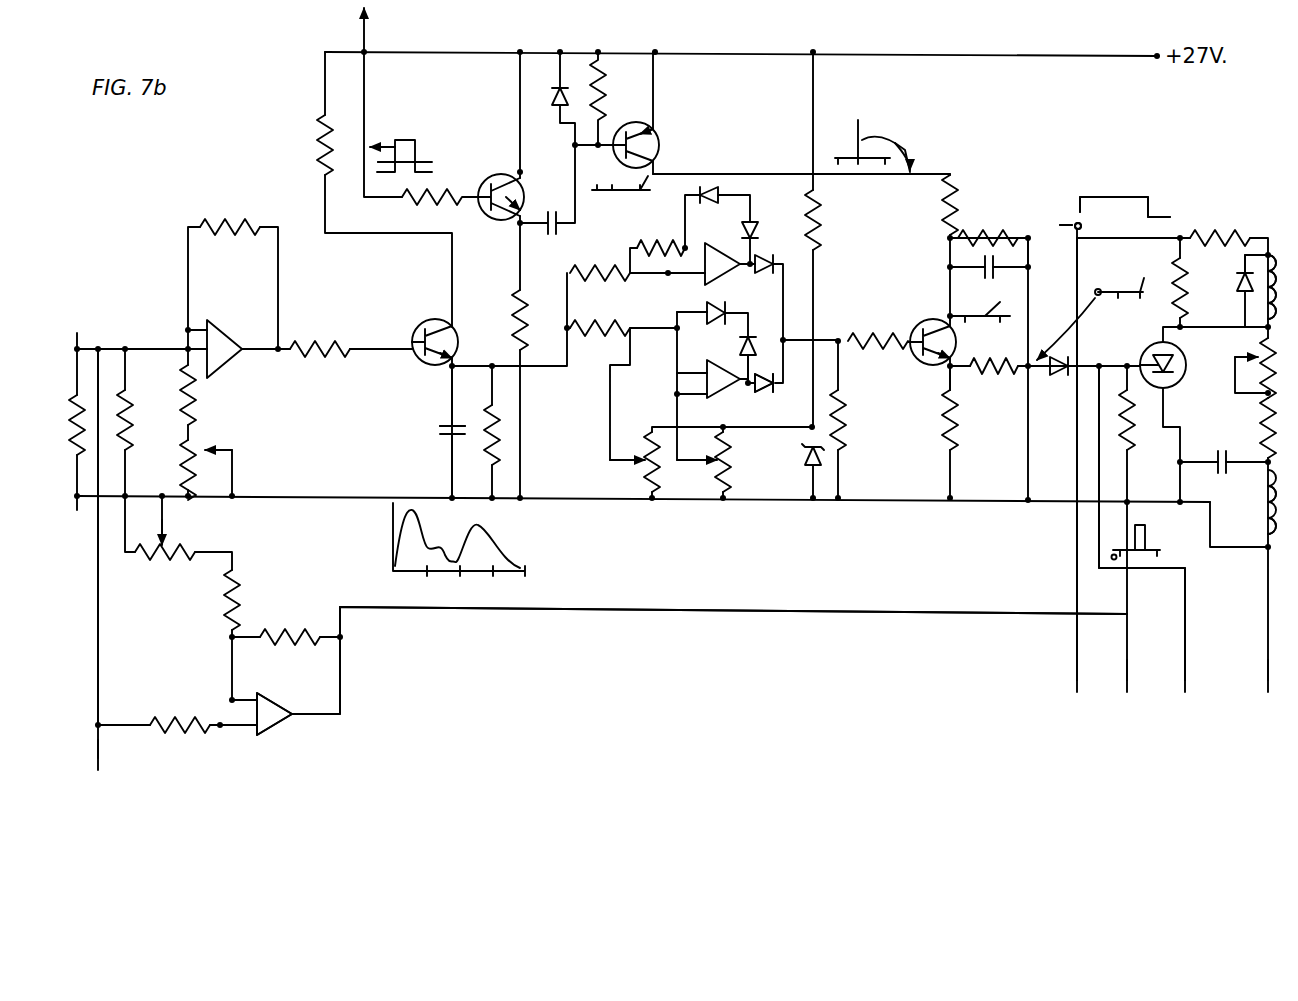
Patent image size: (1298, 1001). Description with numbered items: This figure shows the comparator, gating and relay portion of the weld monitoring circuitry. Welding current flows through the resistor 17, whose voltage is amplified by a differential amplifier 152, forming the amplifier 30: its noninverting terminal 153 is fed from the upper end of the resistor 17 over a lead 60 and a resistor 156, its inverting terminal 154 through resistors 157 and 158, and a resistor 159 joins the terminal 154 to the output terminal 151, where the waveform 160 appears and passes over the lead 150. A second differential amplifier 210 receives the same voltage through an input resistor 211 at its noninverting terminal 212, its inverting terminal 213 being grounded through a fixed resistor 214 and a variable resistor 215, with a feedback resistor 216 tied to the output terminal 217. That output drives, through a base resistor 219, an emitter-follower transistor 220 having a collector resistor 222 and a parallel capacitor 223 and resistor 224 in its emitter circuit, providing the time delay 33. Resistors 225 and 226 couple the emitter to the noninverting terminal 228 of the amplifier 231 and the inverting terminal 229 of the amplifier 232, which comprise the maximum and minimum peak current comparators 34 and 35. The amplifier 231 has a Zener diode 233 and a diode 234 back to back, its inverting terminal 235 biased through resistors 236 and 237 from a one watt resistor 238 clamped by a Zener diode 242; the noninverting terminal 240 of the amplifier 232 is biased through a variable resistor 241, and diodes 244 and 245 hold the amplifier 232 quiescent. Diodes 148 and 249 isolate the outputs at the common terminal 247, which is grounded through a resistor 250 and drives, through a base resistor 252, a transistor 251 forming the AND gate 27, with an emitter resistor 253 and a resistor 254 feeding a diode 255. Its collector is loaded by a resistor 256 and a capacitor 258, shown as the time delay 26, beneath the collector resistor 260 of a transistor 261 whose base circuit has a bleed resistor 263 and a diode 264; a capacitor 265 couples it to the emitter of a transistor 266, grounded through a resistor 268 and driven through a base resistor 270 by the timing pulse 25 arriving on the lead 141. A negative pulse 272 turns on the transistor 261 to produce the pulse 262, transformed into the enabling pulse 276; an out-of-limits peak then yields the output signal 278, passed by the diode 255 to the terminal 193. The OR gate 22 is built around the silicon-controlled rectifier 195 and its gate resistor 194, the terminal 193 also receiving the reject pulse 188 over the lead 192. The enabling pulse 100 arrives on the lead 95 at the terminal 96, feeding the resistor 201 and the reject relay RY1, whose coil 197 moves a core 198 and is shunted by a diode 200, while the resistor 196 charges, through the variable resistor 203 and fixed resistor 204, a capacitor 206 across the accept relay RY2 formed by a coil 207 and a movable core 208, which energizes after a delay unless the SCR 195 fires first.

The lead 141 is at (372, 20).
The collector resistor 222 is at (318, 148).
The timing pulse 25 is at (416, 152).
The base resistor 270 is at (450, 194).
The transistor 266 is at (525, 193).
The electrolytic capacitor 265 is at (550, 232).
The diode 264 is at (555, 108).
The bleed resistor 263 is at (606, 92).
The transistor 261 is at (660, 142).
The negative-going pulse 272 is at (580, 151).
The feedback resistor 216 is at (226, 215).
The signal noninverting terminal 212 is at (150, 338).
The voltage inverting terminal 213 is at (196, 328).
The differential amplifier 210 is at (228, 340).
The fixed resistor 214 is at (200, 386).
The output terminal 217 is at (286, 364).
The base resistor 219 is at (338, 353).
The input resistor 211 is at (130, 420).
The variable resistor 215 is at (180, 460).
The resistor 17 is at (73, 470).
The emitter-follower transistor 220 is at (458, 336).
The resistor 268 is at (512, 300).
The resistor 224 is at (500, 440).
The electrolytic capacitor 223 is at (438, 445).
The time delay circuit 33 is at (428, 433).
The resistor 225 is at (600, 266).
The resistor 226 is at (605, 325).
The voltage noninverting terminal 228 is at (668, 276).
The resistor 236 is at (648, 252).
The diode 244 is at (676, 313).
The differential amplifier 232 is at (680, 370).
The signal noninverting terminal 240 is at (675, 393).
The diode 249 is at (745, 386).
The differential amplifier 231 is at (715, 281).
The voltage inverting terminal 229 is at (681, 333).
The voltage inverting terminal 235 is at (725, 205).
The Zener diode 233 is at (725, 192).
The diode 234 is at (746, 228).
The maximum peak current comparator 34 is at (788, 217).
The diode 148 is at (762, 254).
The one watt resistor 238 is at (822, 228).
The minimum peak current comparator 35 is at (758, 302).
The diode 245 is at (760, 340).
The common output terminal 247 is at (790, 338).
The transistor 251 is at (916, 326).
The base resistor 252 is at (862, 348).
The resistor 250 is at (851, 400).
The resistor 253 is at (959, 430).
The resistor 254 is at (998, 376).
The diode 255 is at (1058, 378).
The AND gate 27 is at (925, 392).
The OR gate 22 is at (1073, 446).
The variable bias resistor 241 is at (729, 455).
The variable bias resistor 237 is at (661, 469).
The Zener diode 242 is at (805, 458).
The positive pulse 262 is at (862, 128).
The collector resistor 260 is at (960, 186).
The time delay circuit 26 is at (1018, 186).
The resistor 256 is at (1005, 228).
The electrolytic capacitor 258 is at (1030, 272).
The enabling pulse 276 is at (956, 296).
The enabling pulse 100 is at (1148, 197).
The terminal 96 is at (1180, 234).
The movable core 198 is at (1272, 245).
The resistor 201 is at (1232, 236).
The coil 197 is at (1240, 270).
The resistor 196 is at (1202, 288).
The diode 200 is at (1238, 300).
The reject relay RY1 is at (1262, 302).
The gate terminal 193 is at (1099, 362).
The positive output signal 278 is at (1143, 285).
The silicon-controlled rectifier 195 is at (1168, 390).
The variable resistor 203 is at (1265, 395).
The fixed resistor 204 is at (1258, 435).
The gate resistor 194 is at (1135, 430).
The electrolytic capacitor 206 is at (1220, 468).
The accept relay RY2 is at (1264, 484).
The coil 207 is at (1262, 508).
The movable core 208 is at (1262, 528).
The reject pulse 188 is at (1150, 541).
The lead 95 is at (1075, 584).
The lead 192 is at (1187, 602).
The lead 150 is at (760, 615).
The waveform 160 is at (488, 538).
The amplifier 30 is at (356, 689).
The lead 60 is at (100, 670).
The variable resistor 158 is at (165, 562).
The resistor 157 is at (240, 583).
The resistor 159 is at (272, 628).
The output terminal 151 is at (346, 640).
The voltage inverting terminal 154 is at (228, 700).
The differential amplifier 152 is at (275, 729).
The voltage noninverting terminal 153 is at (220, 730).
The resistor 156 is at (168, 735).